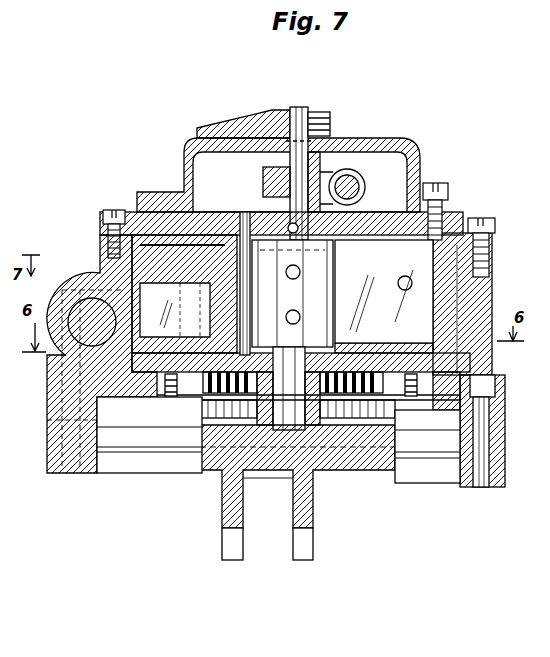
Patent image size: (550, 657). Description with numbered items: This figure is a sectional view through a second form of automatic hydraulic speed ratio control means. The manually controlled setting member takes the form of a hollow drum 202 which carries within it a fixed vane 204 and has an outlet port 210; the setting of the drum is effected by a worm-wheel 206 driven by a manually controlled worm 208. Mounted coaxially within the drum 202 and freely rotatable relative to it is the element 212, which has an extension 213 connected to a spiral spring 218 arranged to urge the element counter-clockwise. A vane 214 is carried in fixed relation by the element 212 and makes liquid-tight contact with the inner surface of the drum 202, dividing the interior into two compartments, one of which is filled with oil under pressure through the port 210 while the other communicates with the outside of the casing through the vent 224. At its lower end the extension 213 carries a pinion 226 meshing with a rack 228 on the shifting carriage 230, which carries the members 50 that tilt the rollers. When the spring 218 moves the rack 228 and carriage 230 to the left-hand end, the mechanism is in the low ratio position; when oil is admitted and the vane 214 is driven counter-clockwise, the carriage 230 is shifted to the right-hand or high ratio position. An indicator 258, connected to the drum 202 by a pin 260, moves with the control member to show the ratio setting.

The members 50 is at (300, 548).
The hollow drum 202 is at (128, 207).
The fixed vane 204 is at (208, 214).
The worm-wheel 206 is at (265, 178).
The worm 208 is at (352, 178).
The outlet port 210 is at (97, 274).
The element 212 is at (292, 285).
The extension 213 is at (296, 410).
The vane 214 is at (407, 314).
The spiral spring 218 is at (382, 394).
The vent 224 is at (112, 313).
The pinion 226 is at (255, 412).
The rack 228 is at (162, 409).
The shifting carriage 230 is at (362, 458).
The indicator 258 is at (254, 126).
The pin 260 is at (308, 116).